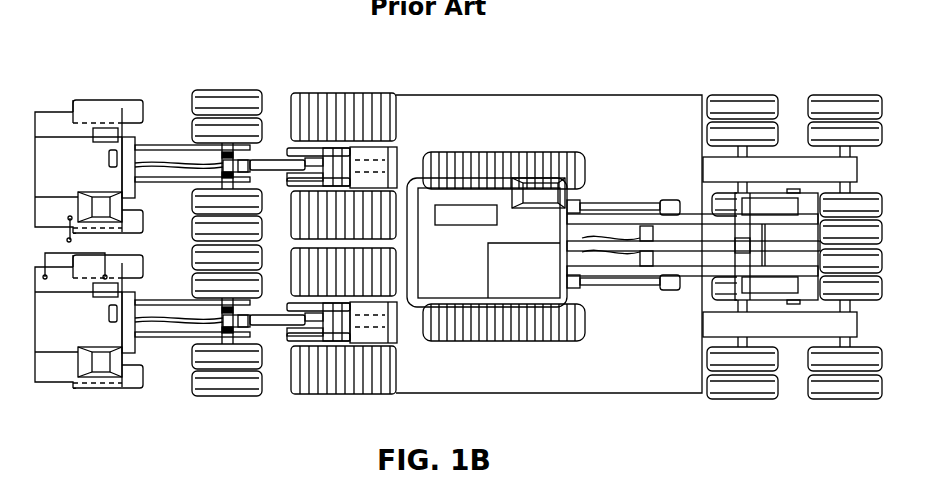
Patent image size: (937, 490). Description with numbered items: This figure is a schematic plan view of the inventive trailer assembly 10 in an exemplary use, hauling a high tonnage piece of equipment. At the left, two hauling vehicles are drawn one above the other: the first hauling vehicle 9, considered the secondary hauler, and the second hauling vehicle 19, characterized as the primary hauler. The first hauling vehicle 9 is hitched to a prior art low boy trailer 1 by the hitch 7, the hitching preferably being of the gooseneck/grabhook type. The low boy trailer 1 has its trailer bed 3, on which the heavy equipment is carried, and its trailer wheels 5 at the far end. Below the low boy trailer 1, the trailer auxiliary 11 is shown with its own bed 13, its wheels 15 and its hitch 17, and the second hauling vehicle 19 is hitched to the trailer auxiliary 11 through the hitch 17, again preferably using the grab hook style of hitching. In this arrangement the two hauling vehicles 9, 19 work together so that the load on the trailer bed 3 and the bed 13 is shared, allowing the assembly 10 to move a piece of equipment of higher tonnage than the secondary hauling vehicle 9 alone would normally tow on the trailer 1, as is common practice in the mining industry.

The assembly 10 is at (143, 22).
The low boy trailer 1 is at (25, 143).
The first hauling vehicle 9 is at (106, 63).
The hitch 7 is at (397, 153).
The trailer bed 3 is at (579, 83).
The trailer wheels 5 is at (767, 83).
The trailer auxiliary 11 is at (25, 342).
The second hauling vehicle 19 is at (99, 421).
The hitch 17 is at (397, 330).
The bed 13 is at (579, 403).
The wheels 15 is at (767, 405).